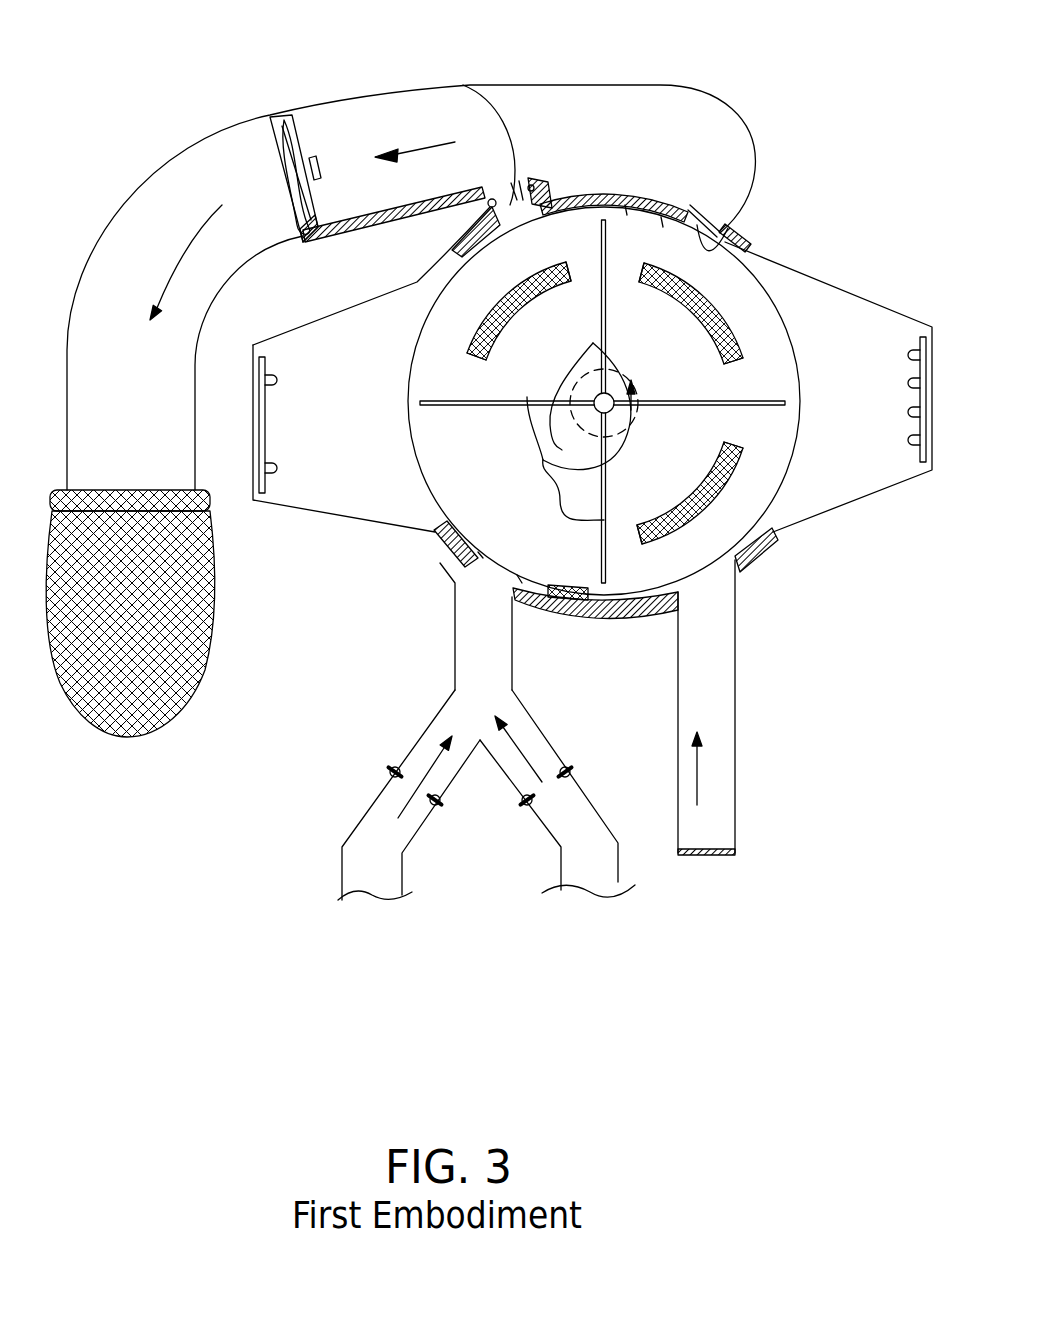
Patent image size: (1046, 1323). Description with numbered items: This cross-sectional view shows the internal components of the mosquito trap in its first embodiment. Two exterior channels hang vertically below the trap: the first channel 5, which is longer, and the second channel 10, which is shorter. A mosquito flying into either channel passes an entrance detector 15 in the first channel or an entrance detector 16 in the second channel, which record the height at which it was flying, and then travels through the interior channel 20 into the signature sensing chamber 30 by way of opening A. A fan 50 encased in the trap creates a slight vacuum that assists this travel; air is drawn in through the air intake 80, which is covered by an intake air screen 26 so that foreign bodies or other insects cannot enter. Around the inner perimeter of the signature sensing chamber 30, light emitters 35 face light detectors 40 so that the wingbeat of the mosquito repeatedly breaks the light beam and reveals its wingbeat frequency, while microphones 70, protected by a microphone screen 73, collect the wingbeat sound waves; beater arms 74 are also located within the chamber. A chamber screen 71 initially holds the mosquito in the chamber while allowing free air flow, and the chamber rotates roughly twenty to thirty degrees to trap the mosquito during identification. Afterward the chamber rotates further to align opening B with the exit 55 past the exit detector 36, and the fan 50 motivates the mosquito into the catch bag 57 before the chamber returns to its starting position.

The first channel 5 is at (355, 863).
The second channel 10 is at (583, 868).
The entrance detector for the first channel 15 is at (530, 800).
The entrance detector for the second channel 16 is at (435, 800).
The interior channel 20 is at (478, 633).
The intake air screen 26 is at (700, 860).
The signature sensing chamber 30 is at (747, 317).
The light emitter 35 is at (266, 414).
The exit detector 36 is at (490, 213).
The light detector 40 is at (920, 418).
The fan 50 is at (300, 115).
The exit from signature sensing chamber 55 is at (463, 85).
The catch bag 57 is at (118, 740).
The microphone 70 is at (505, 300).
The chamber screen 71 is at (745, 232).
The microphone screen 73 is at (480, 347).
The beater arms 74 is at (543, 460).
The air intake 80 is at (712, 668).